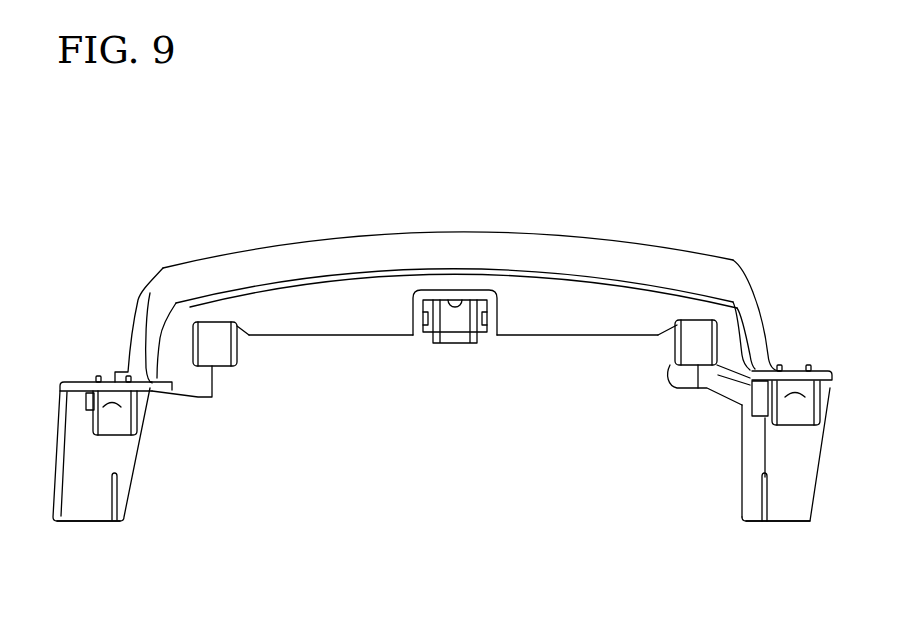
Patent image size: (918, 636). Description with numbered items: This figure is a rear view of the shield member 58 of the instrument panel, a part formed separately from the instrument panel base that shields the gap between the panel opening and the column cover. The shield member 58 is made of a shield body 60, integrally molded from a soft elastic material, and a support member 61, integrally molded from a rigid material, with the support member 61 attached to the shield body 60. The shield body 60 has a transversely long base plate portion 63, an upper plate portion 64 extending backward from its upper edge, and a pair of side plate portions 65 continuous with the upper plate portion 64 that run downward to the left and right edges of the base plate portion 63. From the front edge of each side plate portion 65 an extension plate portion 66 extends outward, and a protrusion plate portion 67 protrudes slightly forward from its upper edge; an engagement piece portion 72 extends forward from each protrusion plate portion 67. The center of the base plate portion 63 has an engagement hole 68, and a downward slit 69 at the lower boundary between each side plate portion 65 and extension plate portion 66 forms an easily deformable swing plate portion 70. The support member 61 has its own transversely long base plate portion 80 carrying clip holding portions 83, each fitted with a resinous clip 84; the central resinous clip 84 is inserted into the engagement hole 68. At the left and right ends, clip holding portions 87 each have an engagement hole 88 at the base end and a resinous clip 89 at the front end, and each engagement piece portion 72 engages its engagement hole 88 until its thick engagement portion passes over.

The shield member 58 is at (645, 216).
The shield body 60 is at (578, 234).
The support member 61 is at (667, 381).
The base plate portion 63 is at (563, 317).
The upper plate portion 64 is at (316, 247).
The side plate portions 65 is at (133, 476).
The extension plate portions 66 is at (85, 458).
The protrusion plate portion 67 is at (85, 382).
The engagement hole 68 is at (460, 303).
The slit 69 is at (113, 505).
The swing plate portion 70 is at (90, 509).
The engagement piece portions 72 is at (115, 393).
The base plate portion 80 is at (350, 322).
The clip holding portions 83 is at (192, 366).
The resinous clip 84 is at (217, 357).
The clip holding portions 87 is at (93, 417).
The engagement hole 88 is at (100, 393).
The resinous clip 89 is at (110, 430).